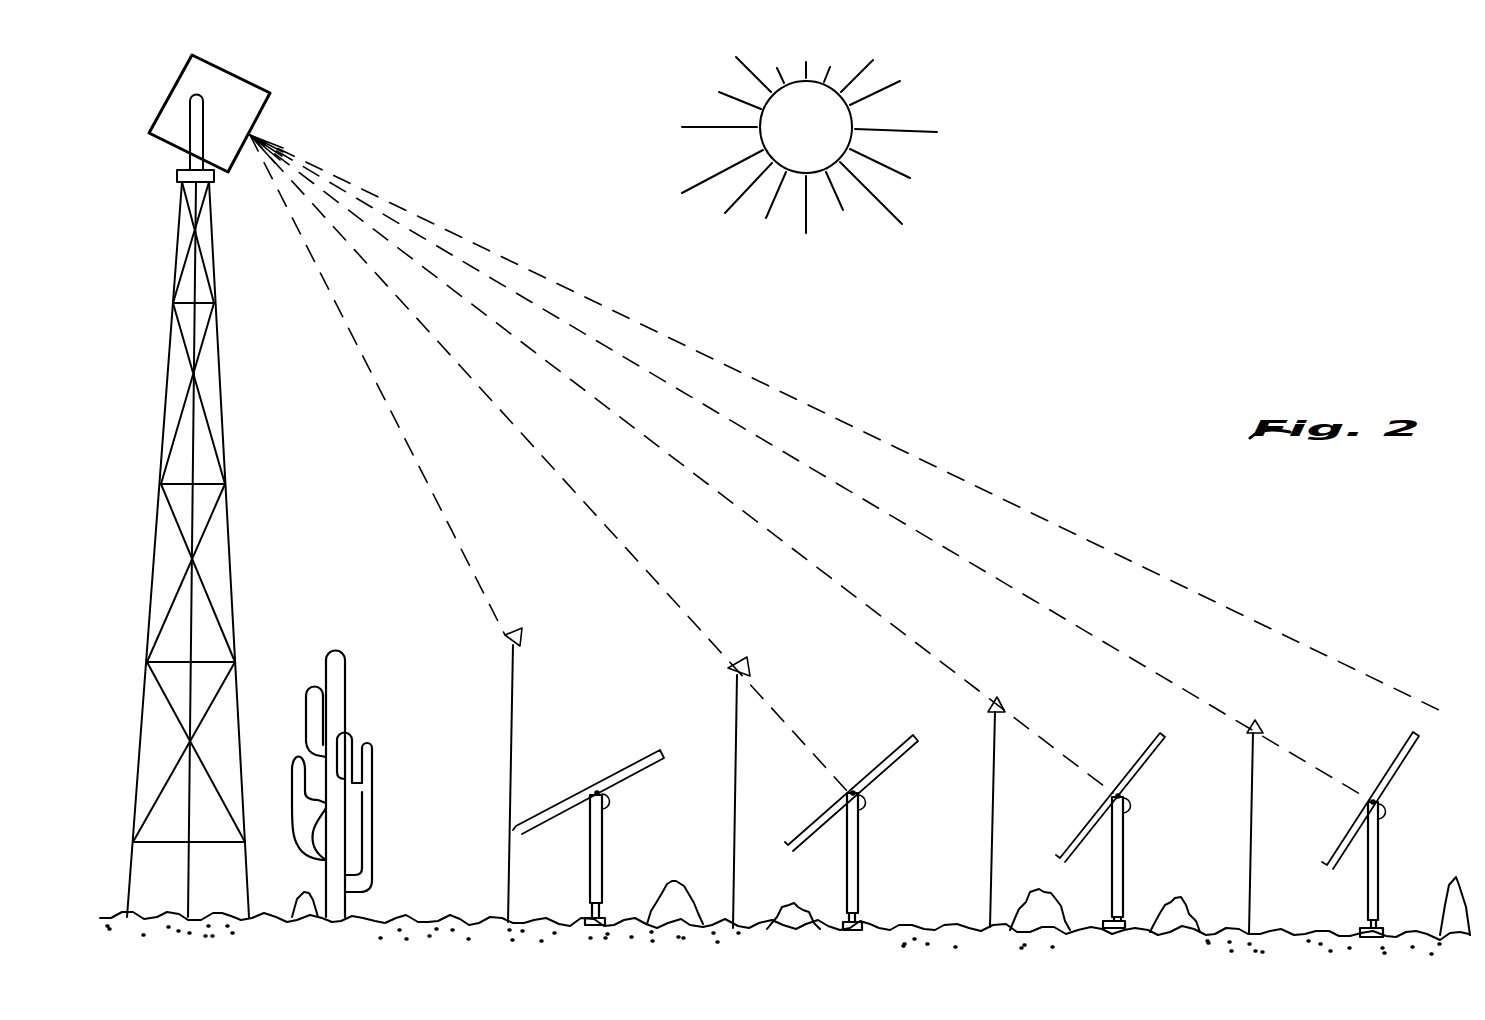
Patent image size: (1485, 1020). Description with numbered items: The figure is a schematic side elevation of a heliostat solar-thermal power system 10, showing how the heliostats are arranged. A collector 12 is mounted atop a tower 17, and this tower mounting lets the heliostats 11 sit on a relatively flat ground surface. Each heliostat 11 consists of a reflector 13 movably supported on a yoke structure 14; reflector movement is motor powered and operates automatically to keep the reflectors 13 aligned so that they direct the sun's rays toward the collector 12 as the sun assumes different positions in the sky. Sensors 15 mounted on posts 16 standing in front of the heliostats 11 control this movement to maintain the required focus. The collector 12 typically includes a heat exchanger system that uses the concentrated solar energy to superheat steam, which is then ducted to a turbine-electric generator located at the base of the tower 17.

The heliostat solar-thermal power system 10 is at (1300, 613).
The heliostat 11 is at (616, 774).
The collector 12 is at (250, 108).
The reflector 13 is at (652, 772).
The yoke structure 14 is at (602, 850).
The sensor 15 is at (524, 634).
The post 16 is at (508, 812).
The tower 17 is at (228, 535).